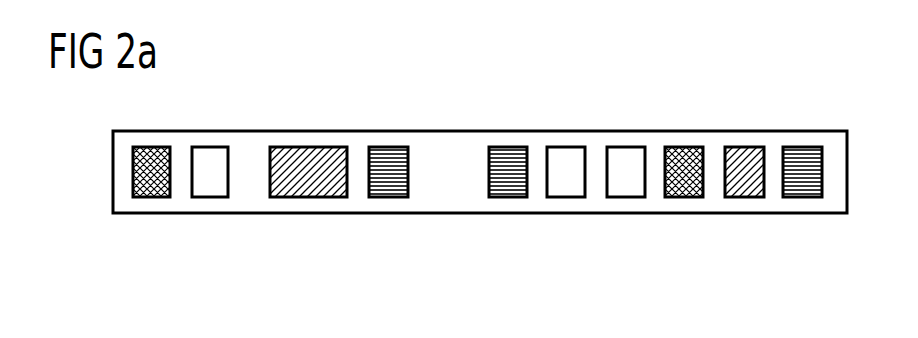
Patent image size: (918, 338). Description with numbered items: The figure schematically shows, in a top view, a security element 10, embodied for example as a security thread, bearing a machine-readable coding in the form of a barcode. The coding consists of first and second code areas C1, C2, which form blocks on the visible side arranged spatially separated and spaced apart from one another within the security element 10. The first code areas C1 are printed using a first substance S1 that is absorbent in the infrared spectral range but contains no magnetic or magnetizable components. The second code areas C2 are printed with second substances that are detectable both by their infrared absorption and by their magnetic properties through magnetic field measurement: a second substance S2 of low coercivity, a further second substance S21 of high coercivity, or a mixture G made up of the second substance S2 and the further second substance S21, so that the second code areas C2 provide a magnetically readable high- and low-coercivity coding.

The security element 10 is at (113, 172).
The first substance S1 is at (388, 147).
The second substance S2 is at (150, 147).
The further second substance S21 is at (209, 147).
The mixture G is at (309, 147).
The first code areas C1 is at (390, 197).
The second code areas C2 is at (155, 197).